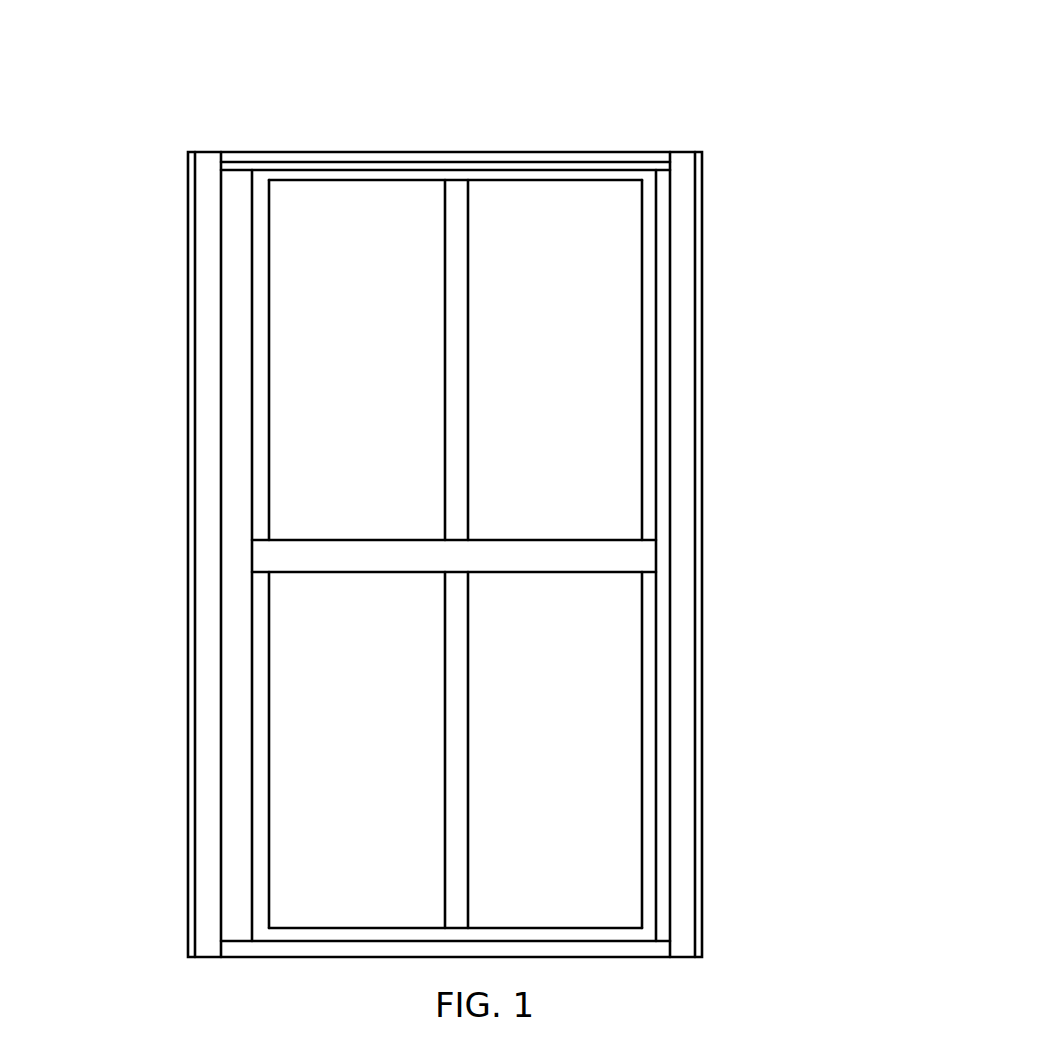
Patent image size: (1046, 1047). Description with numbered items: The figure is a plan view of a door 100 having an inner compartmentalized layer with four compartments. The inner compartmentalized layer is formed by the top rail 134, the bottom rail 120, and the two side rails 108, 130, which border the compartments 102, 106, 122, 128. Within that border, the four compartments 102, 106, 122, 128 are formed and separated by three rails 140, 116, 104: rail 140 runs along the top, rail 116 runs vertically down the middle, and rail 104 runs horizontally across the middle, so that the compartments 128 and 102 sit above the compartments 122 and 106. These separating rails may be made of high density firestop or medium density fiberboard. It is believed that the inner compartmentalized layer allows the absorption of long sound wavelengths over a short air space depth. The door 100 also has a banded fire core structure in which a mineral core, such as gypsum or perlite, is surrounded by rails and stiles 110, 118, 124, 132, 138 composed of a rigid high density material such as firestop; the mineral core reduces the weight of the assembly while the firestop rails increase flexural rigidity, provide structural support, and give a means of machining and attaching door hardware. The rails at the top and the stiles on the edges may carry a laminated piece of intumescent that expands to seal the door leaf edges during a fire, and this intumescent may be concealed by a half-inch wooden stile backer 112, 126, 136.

The door 100 is at (448, 85).
The compartment 102 is at (597, 250).
The rail 104 is at (557, 555).
The compartment 106 is at (605, 637).
The side rail 108 is at (651, 683).
The firestop rail or stile 110 is at (662, 717).
The wooden stile backer 112 is at (700, 758).
The rail 116 is at (462, 812).
The firestop rail or stile 118 is at (629, 950).
The bottom rail 120 is at (296, 935).
The compartment 122 is at (300, 683).
The firestop rail or stile 124 is at (207, 540).
The wooden stile backer 126 is at (190, 458).
The compartment 128 is at (300, 328).
The side rail 130 is at (262, 265).
The firestop rail or stile 132 is at (240, 213).
The top rail 134 is at (297, 178).
The wooden stile backer 136 is at (298, 158).
The firestop rail or stile 138 is at (410, 168).
The rail 140 is at (459, 202).